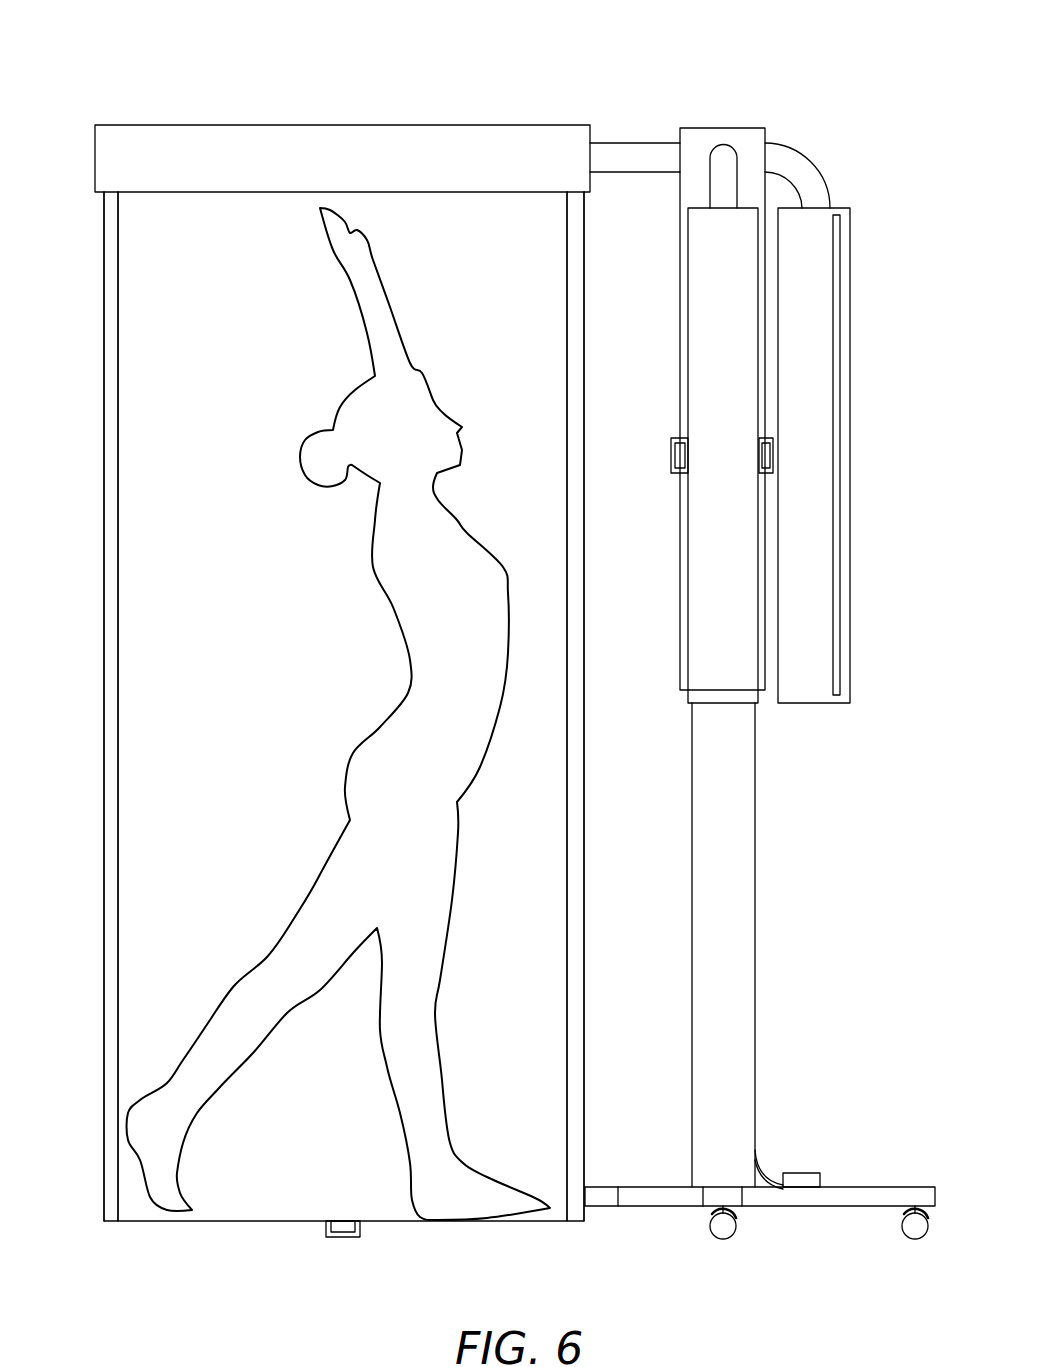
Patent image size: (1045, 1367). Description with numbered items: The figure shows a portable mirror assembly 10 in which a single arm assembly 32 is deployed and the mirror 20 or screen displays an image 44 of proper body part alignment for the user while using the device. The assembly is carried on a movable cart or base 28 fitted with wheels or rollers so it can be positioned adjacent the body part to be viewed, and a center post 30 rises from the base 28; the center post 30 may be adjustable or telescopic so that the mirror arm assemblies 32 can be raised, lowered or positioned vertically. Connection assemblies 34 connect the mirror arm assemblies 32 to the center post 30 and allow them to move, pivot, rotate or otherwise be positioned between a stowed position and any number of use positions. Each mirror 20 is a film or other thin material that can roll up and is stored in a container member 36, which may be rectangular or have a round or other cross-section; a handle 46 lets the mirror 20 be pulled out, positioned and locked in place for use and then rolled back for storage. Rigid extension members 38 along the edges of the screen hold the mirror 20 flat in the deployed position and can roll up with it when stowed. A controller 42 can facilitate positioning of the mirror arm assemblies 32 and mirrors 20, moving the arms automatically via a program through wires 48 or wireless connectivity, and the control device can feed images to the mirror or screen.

The mirror assembly 10 is at (840, 92).
The mirror 20 is at (165, 312).
The base 28 is at (815, 1197).
The center post 30 is at (755, 853).
The mirror arm assembly 32 is at (160, 92).
The connection assembly 34 is at (812, 160).
The container member 36 is at (417, 137).
The rigid extension member 38 is at (104, 477).
The controller 42 is at (802, 1172).
The image 44 is at (420, 604).
The handle 46 is at (671, 457).
The wire 48 is at (775, 1150).